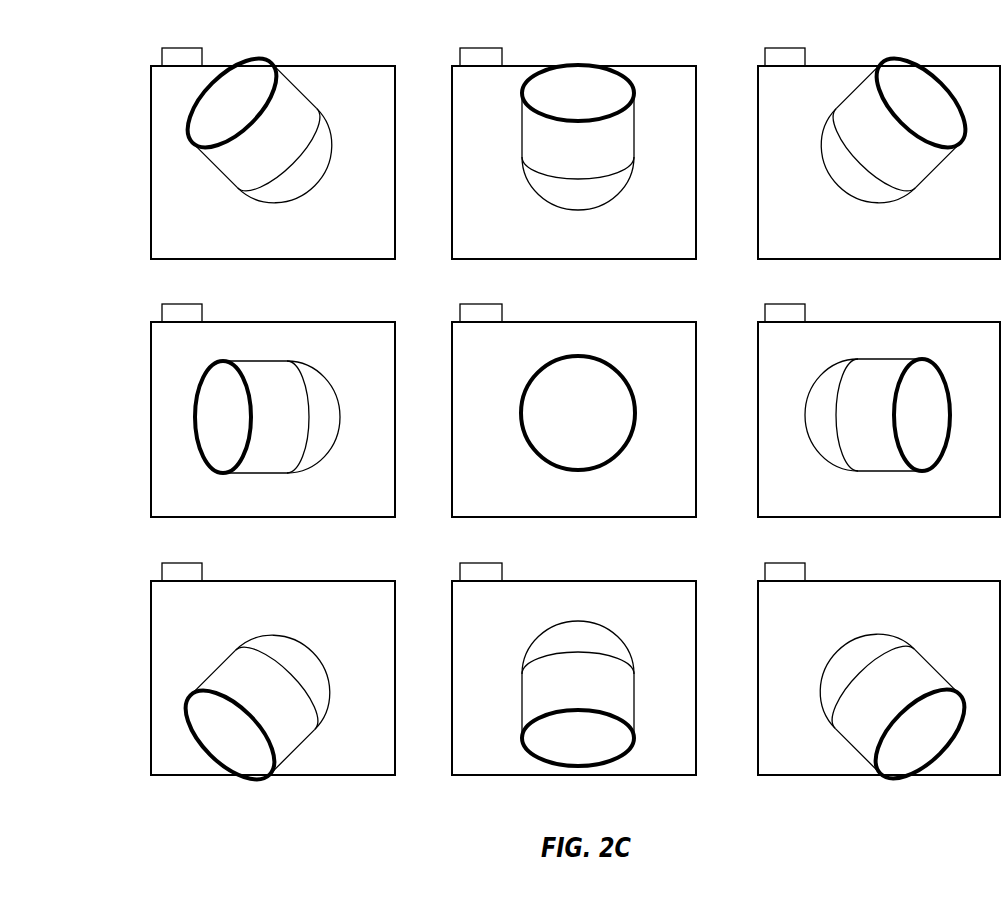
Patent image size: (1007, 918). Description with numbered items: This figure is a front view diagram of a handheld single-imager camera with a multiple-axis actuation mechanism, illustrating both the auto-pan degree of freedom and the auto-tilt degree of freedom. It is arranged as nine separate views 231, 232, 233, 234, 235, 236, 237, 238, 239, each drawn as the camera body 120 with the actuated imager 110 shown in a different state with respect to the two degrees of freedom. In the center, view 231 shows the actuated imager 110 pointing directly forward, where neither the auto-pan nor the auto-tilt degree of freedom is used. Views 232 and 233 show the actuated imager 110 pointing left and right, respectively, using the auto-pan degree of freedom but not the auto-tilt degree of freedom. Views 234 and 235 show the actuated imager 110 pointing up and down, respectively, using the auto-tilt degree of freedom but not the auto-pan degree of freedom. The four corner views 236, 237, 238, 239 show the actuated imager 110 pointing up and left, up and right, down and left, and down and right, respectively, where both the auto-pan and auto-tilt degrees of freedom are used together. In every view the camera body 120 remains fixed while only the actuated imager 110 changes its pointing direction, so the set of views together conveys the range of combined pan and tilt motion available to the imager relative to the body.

The actuated imager 110 is at (593, 83).
The camera body 120 is at (150, 189).
The view 231 is at (512, 502).
The view 232 is at (203, 502).
The view 233 is at (813, 502).
The view 234 is at (574, 146).
The view 235 is at (512, 616).
The view 236 is at (232, 151).
The view 237 is at (813, 243).
The view 238 is at (203, 616).
The view 239 is at (813, 616).